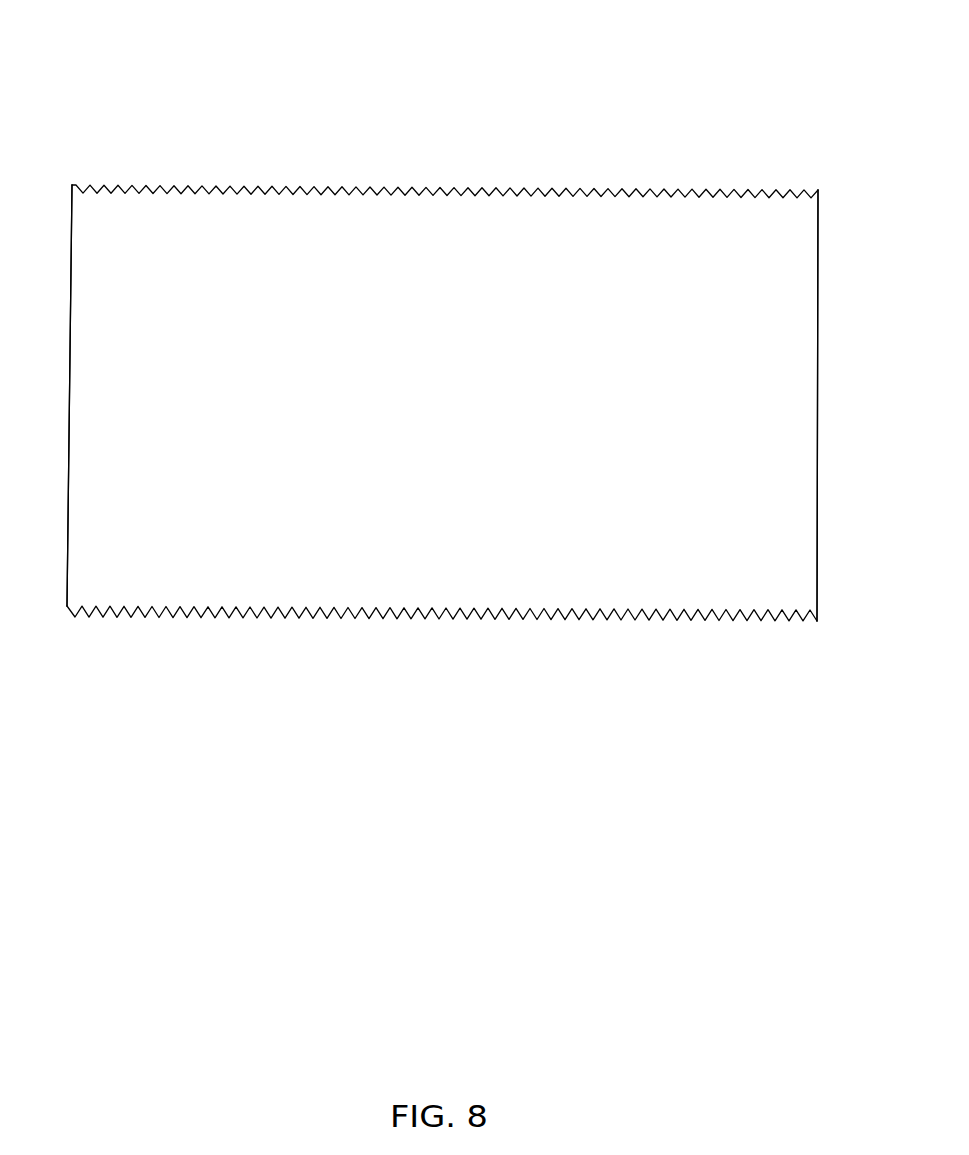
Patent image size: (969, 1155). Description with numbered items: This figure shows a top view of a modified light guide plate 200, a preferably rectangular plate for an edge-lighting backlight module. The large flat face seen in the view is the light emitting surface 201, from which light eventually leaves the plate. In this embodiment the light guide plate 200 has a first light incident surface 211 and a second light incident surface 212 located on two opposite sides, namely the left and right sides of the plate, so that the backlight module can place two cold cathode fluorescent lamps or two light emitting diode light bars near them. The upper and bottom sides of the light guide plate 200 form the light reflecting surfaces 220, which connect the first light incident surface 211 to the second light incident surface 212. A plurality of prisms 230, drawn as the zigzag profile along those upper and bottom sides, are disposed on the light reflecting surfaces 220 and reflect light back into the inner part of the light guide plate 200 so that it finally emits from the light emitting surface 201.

The light guide plate 200 is at (95, 38).
The light emitting surface 201 is at (552, 540).
The first light incident surface 211 is at (69, 453).
The second light incident surface 212 is at (818, 455).
The light reflecting surfaces 220 is at (337, 615).
The prisms 230 is at (508, 192).